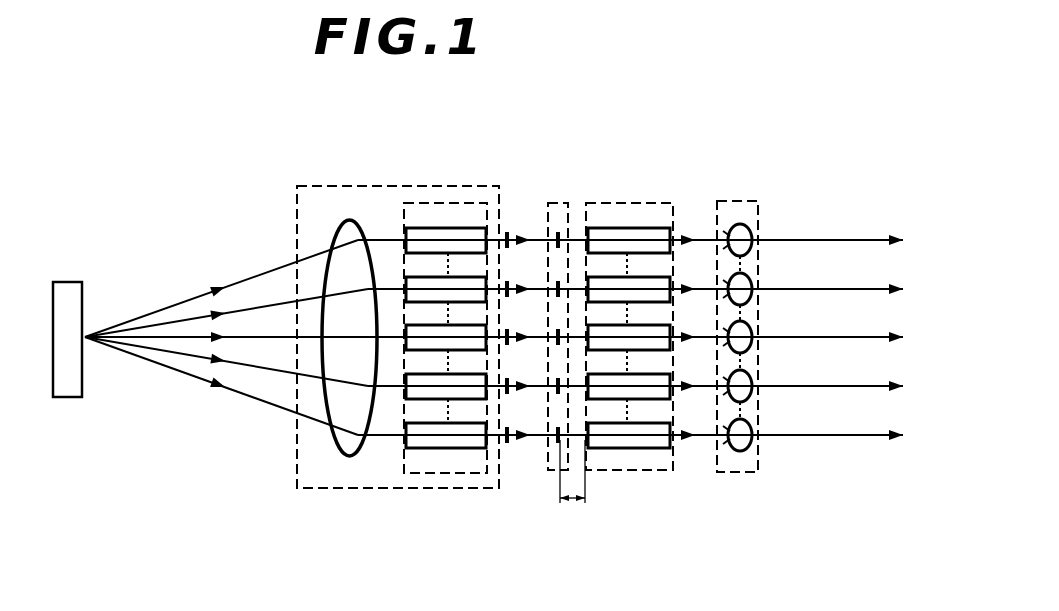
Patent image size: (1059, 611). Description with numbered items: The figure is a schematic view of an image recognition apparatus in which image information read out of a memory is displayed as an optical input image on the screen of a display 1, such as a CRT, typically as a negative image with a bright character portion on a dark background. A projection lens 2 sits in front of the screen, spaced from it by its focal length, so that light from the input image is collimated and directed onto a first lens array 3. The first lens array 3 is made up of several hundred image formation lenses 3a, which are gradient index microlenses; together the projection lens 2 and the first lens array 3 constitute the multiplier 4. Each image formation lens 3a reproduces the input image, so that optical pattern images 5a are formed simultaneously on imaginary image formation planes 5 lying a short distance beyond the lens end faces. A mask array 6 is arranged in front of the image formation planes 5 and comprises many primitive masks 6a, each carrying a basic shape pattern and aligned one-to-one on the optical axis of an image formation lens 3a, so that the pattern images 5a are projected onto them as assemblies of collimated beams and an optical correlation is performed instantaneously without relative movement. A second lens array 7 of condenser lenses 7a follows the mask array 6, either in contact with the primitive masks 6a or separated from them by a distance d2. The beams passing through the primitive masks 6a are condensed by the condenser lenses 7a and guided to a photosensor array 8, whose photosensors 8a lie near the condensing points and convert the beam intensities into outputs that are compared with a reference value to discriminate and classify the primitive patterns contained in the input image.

The display 1 is at (72, 290).
The projection lens 2 is at (349, 220).
The first lens array 3 is at (458, 203).
The image formation lenses 3a is at (428, 283).
The multiplier 4 is at (295, 222).
The imaginary image formation planes 5 is at (514, 224).
The optical pattern images 5a is at (508, 391).
The mask array 6 is at (549, 450).
The primitive masks 6a is at (559, 283).
The second lens array 7 is at (613, 202).
The condenser lenses 7a is at (653, 280).
The photosensor array 8 is at (735, 203).
The photosensors 8a is at (747, 273).
The distance between mask array and second lens array d2 is at (573, 500).